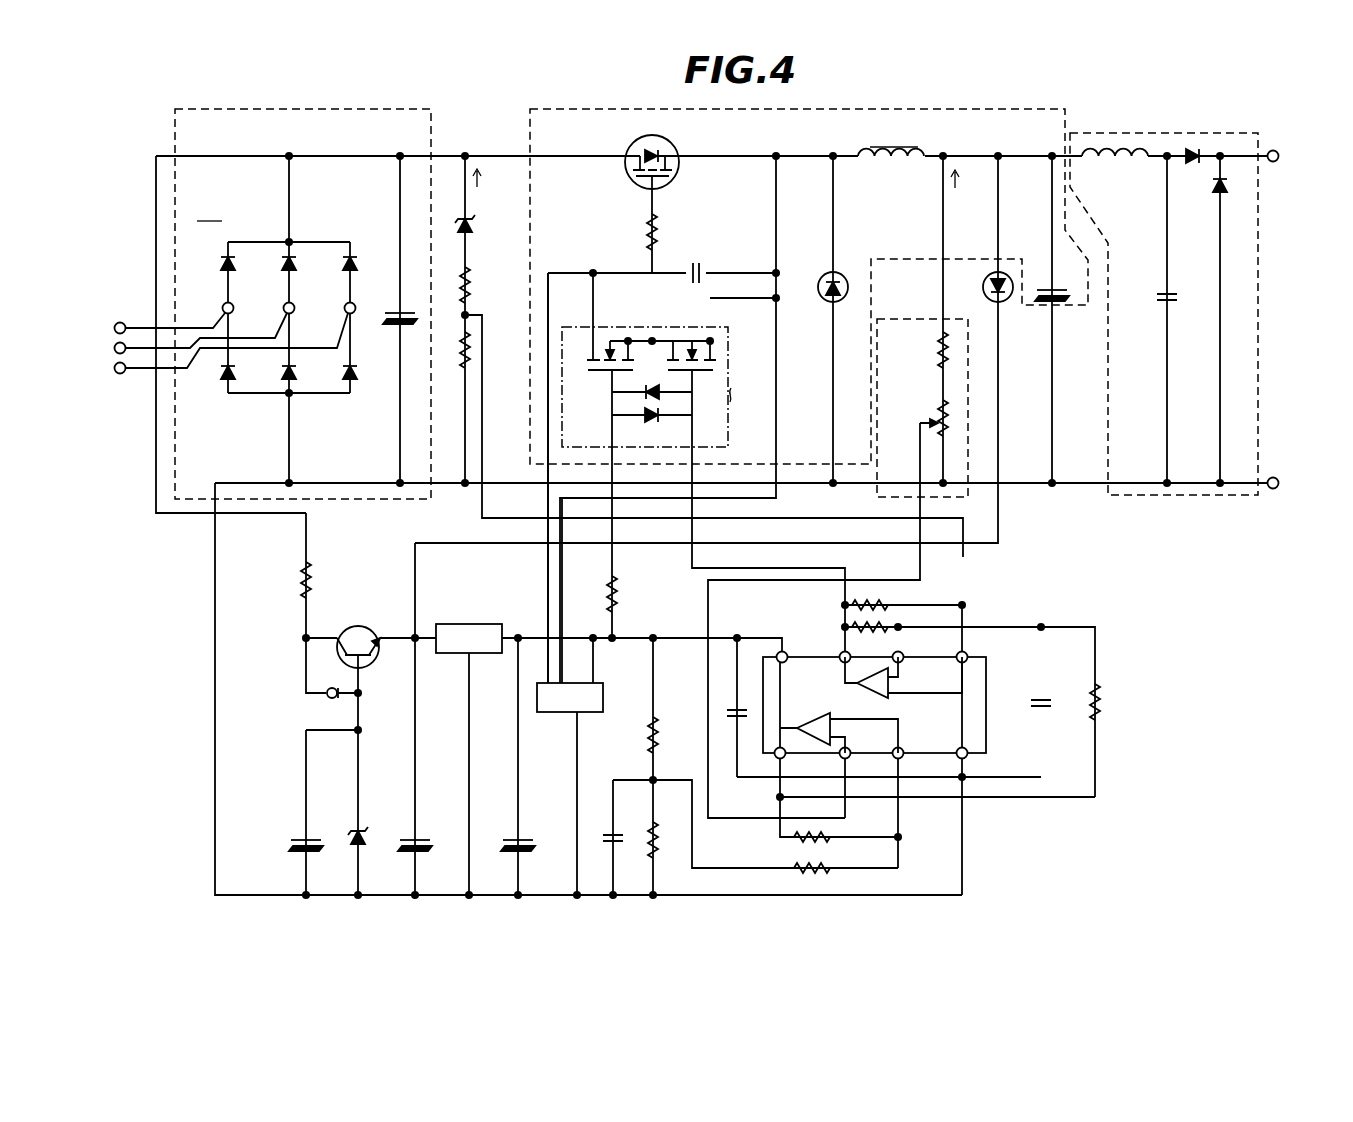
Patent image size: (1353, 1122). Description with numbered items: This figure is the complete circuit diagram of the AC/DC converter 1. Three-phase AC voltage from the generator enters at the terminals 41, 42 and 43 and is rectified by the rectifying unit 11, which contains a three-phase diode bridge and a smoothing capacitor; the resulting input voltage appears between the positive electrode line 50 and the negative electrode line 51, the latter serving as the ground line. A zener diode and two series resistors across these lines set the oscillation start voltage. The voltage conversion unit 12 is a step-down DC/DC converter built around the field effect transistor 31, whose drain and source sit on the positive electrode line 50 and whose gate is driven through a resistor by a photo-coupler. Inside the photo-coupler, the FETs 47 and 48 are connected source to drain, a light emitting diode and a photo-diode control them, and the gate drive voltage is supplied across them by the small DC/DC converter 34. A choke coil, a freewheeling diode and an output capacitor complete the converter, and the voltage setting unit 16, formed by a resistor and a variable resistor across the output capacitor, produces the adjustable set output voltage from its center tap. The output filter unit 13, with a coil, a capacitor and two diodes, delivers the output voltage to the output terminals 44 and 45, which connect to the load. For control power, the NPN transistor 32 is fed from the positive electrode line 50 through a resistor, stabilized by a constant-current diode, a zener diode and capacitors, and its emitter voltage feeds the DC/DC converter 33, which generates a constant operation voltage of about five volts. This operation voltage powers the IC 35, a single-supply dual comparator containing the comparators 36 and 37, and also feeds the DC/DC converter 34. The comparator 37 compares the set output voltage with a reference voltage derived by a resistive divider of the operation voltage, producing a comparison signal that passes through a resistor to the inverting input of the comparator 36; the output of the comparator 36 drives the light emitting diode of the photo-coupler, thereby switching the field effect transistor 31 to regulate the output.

The AC/DC converter 1 is at (1266, 587).
The rectifying unit 11 is at (175, 125).
The voltage conversion unit 12 is at (530, 125).
The output filter unit 13 is at (1192, 133).
The voltage setting unit 16 is at (917, 318).
The field effect transistor 31 is at (676, 183).
The transistor 32 is at (358, 626).
The DC/DC converter 33 is at (470, 624).
The DC/DC converter 34 is at (603, 697).
The IC 35 is at (986, 738).
The comparator 36 is at (892, 698).
The comparator 37 is at (814, 718).
The terminal 41 is at (114, 323).
The terminal 42 is at (114, 346).
The terminal 43 is at (114, 372).
The output terminal 44 is at (1272, 150).
The output terminal 45 is at (1272, 477).
The FET 47 is at (596, 374).
The FET 48 is at (702, 374).
The positive electrode line 50 is at (459, 150).
The negative electrode line 51 is at (462, 486).